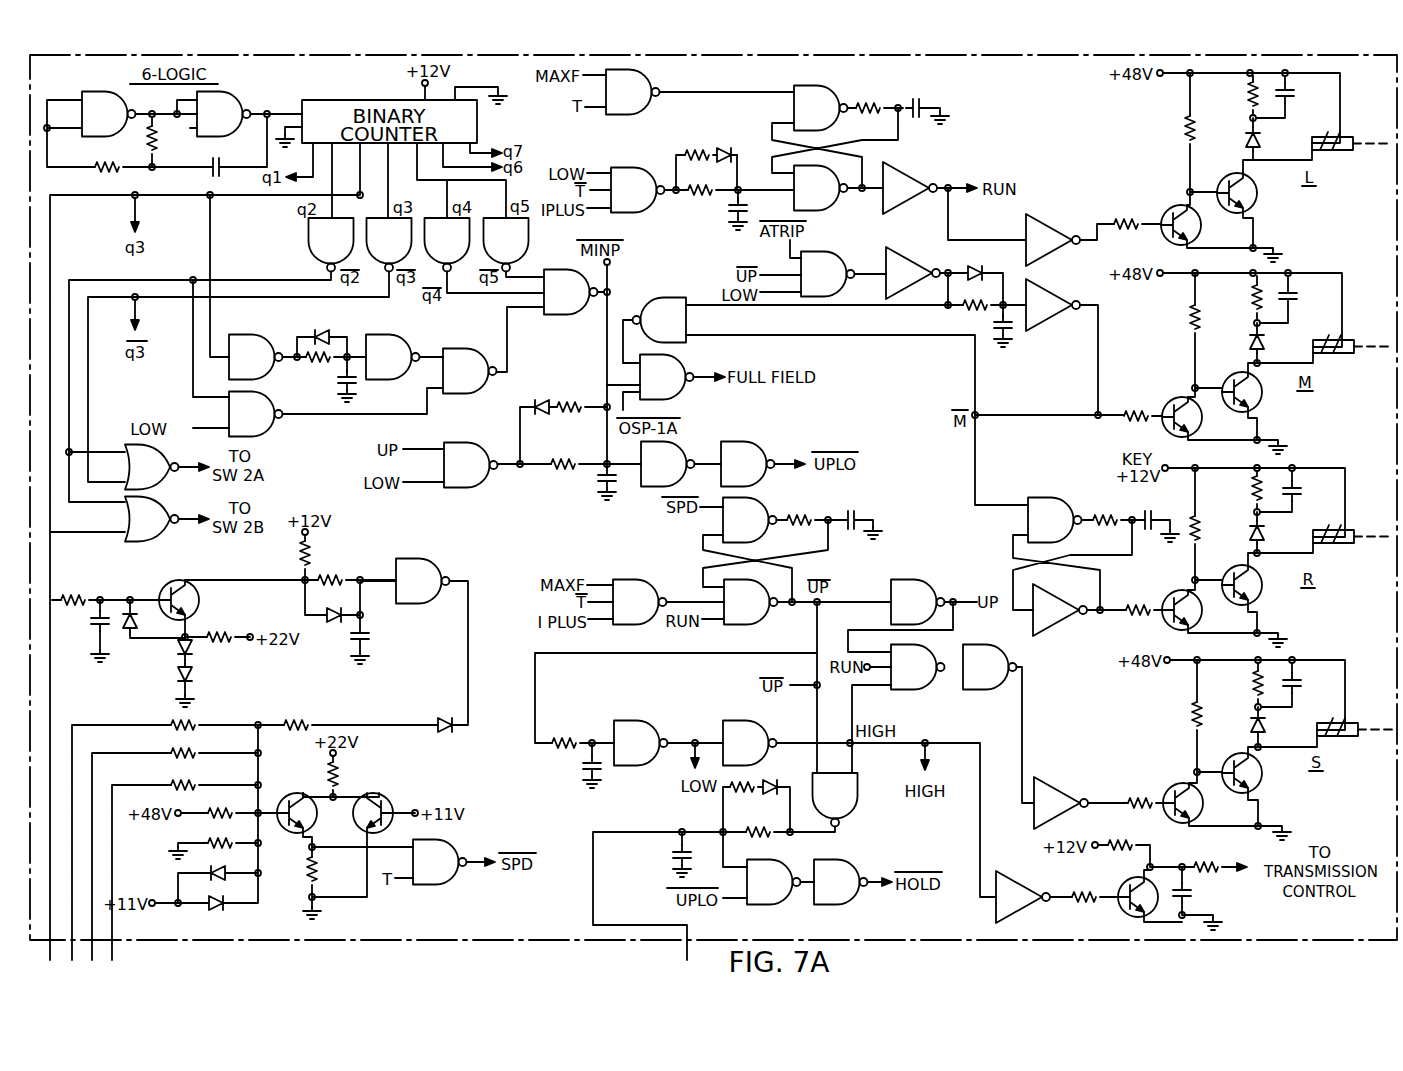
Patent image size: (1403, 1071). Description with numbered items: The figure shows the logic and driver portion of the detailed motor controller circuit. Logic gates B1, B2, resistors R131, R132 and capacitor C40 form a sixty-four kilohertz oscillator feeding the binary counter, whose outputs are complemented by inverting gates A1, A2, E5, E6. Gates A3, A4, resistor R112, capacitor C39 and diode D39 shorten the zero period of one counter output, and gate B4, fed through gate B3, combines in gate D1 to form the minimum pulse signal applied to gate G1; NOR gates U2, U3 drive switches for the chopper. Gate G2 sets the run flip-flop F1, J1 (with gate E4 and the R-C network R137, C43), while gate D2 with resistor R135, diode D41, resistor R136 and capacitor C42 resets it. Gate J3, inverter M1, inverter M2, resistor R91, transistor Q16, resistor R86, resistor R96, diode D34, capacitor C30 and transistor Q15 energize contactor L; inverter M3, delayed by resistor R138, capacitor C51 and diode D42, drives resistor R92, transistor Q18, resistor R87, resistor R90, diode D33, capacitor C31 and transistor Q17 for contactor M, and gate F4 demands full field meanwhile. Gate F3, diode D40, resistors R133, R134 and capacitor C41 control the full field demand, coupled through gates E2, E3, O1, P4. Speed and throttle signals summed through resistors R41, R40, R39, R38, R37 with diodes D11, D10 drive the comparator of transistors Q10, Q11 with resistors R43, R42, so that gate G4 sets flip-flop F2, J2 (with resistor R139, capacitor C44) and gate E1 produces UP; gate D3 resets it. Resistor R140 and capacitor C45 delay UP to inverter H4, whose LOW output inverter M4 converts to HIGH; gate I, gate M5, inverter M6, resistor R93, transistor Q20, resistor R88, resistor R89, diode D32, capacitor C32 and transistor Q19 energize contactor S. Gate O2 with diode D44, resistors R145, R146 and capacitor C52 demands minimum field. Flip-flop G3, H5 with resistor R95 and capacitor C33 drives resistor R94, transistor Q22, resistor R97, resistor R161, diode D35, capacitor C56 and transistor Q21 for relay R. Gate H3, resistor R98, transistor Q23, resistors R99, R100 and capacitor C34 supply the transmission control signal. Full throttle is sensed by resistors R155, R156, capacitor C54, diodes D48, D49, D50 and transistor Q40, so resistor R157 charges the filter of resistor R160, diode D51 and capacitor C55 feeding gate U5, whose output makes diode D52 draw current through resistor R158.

The logic gate B1 is at (109, 114).
The logic gate B2 is at (224, 114).
The inverting gate A1 is at (331, 245).
The inverting gate A2 is at (389, 245).
The inverting gate E5 is at (447, 245).
The inverting gate E6 is at (506, 245).
The logic gate A3 is at (256, 357).
The logic gate A4 is at (393, 357).
The logic gate B3 is at (256, 414).
The logic gate B4 is at (470, 371).
The NOR gate U2 is at (152, 467).
The NOR gate U3 is at (152, 519).
The logic gate F3 is at (471, 465).
The logic gate D1 is at (571, 292).
The logic gate G2 is at (633, 92).
The logic gate D2 is at (638, 190).
The flip-flop gate F1 is at (821, 108).
The flip-flop gate J1 is at (821, 188).
The logic gate J3 is at (828, 274).
The inverter gate E4 is at (910, 188).
The inverter M1 is at (913, 273).
The inverter M2 is at (1053, 240).
The inverter M3 is at (1053, 305).
The logic gate F4 is at (660, 320).
The logic gate G1 is at (667, 377).
The logic gate E2 is at (668, 464).
The logic gate E3 is at (748, 464).
The flip-flop gate F2 is at (750, 520).
The logic gate D3 is at (640, 602).
The flip-flop gate J2 is at (751, 602).
The logic gate E1 is at (918, 602).
The logic gate I is at (918, 667).
The logic gate M5 is at (990, 667).
The inverter H4 is at (641, 743).
The inverter M4 is at (750, 743).
The logic gate O2 is at (835, 800).
The logic gate O1 is at (774, 882).
The logic gate P4 is at (841, 882).
The logic gate G4 is at (440, 862).
The logic gate U5 is at (423, 581).
The flip-flop gate G3 is at (1055, 520).
The flip-flop gate H5 is at (1060, 610).
The inverter M6 is at (1061, 803).
The logic gate H3 is at (1023, 897).
The resistor R131 is at (145, 143).
The resistor R132 is at (105, 170).
The capacitor C40 is at (220, 158).
The diode D39 is at (318, 328).
The resistor R112 is at (316, 366).
The capacitor C39 is at (357, 375).
The diode D40 is at (545, 398).
The resistor R133 is at (570, 414).
The resistor R134 is at (572, 456).
The capacitor C41 is at (596, 481).
The resistor R135 is at (695, 148).
The diode D41 is at (724, 146).
The resistor R136 is at (694, 200).
The capacitor C42 is at (729, 218).
The resistor R137 is at (868, 102).
The capacitor C43 is at (920, 98).
The diode D42 is at (985, 266).
The resistor R138 is at (968, 312).
The capacitor C51 is at (1018, 330).
The resistor R91 is at (1130, 218).
The resistor R86 is at (1184, 138).
The resistor R96 is at (1247, 102).
The diode D34 is at (1243, 140).
The capacitor C30 is at (1298, 100).
The transistor Q16 is at (1168, 210).
The transistor Q15 is at (1259, 194).
The resistor R87 is at (1188, 330).
The resistor R90 is at (1250, 304).
The diode D33 is at (1248, 344).
The capacitor C31 is at (1300, 303).
The transistor Q17 is at (1232, 375).
The transistor Q18 is at (1170, 402).
The resistor R92 is at (1142, 410).
The resistor R97 is at (1188, 520).
The resistor R161 is at (1250, 496).
The diode D35 is at (1248, 532).
The capacitor C56 is at (1302, 492).
The transistor Q21 is at (1230, 568).
The transistor Q22 is at (1170, 598).
The resistor R94 is at (1142, 605).
The resistor R95 is at (1105, 513).
The capacitor C33 is at (1150, 540).
The resistor R88 is at (1190, 722).
The resistor R89 is at (1250, 688).
The diode D32 is at (1250, 722).
The capacitor C32 is at (1302, 690).
The transistor Q19 is at (1232, 757).
The transistor Q20 is at (1172, 790).
The resistor R93 is at (1138, 796).
The resistor R99 is at (1118, 840).
The resistor R100 is at (1204, 862).
The capacitor C34 is at (1192, 890).
The transistor Q23 is at (1120, 885).
The resistor R98 is at (1084, 892).
The resistor R139 is at (806, 512).
The capacitor C44 is at (852, 510).
The resistor R140 is at (560, 738).
The capacitor C45 is at (580, 766).
The diode D44 is at (776, 778).
The resistor R145 is at (742, 796).
The resistor R146 is at (756, 838).
The capacitor C52 is at (670, 853).
The resistor R41 is at (180, 720).
The resistor R158 is at (304, 718).
The diode D52 is at (442, 715).
The resistor R40 is at (180, 748).
The resistor R39 is at (180, 780).
The resistor R38 is at (202, 806).
The resistor R37 is at (214, 842).
The diode D11 is at (222, 870).
The diode D10 is at (216, 912).
The transistor Q10 is at (284, 800).
The transistor Q11 is at (382, 800).
The resistor R43 is at (340, 778).
The resistor R42 is at (306, 872).
The transistor Q40 is at (172, 582).
The resistor R155 is at (70, 595).
The resistor R156 is at (208, 624).
The capacitor C54 is at (92, 627).
The diode D48 is at (138, 630).
The diode D50 is at (176, 648).
The diode D49 is at (196, 672).
The resistor R157 is at (298, 558).
The resistor R160 is at (324, 572).
The diode D51 is at (328, 627).
The capacitor C55 is at (372, 636).